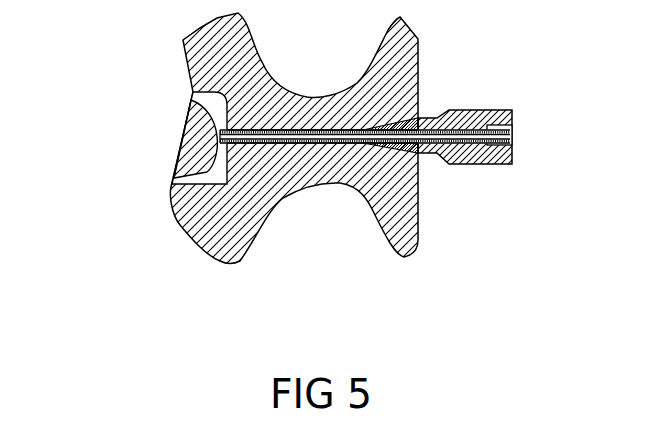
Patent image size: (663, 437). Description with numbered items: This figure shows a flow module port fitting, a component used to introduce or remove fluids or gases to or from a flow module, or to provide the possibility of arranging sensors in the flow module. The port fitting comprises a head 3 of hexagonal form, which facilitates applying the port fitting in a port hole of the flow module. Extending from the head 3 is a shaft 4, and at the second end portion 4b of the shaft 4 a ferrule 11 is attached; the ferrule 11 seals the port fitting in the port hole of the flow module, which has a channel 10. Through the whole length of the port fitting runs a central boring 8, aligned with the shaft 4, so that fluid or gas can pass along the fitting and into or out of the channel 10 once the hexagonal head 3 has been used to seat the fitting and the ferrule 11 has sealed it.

The head 3 is at (473, 160).
The shaft 4 is at (320, 143).
The second end portion of the shaft 4b is at (422, 153).
The central boring 8 is at (264, 143).
The channel 10 is at (210, 172).
The ferrule 11 is at (422, 95).